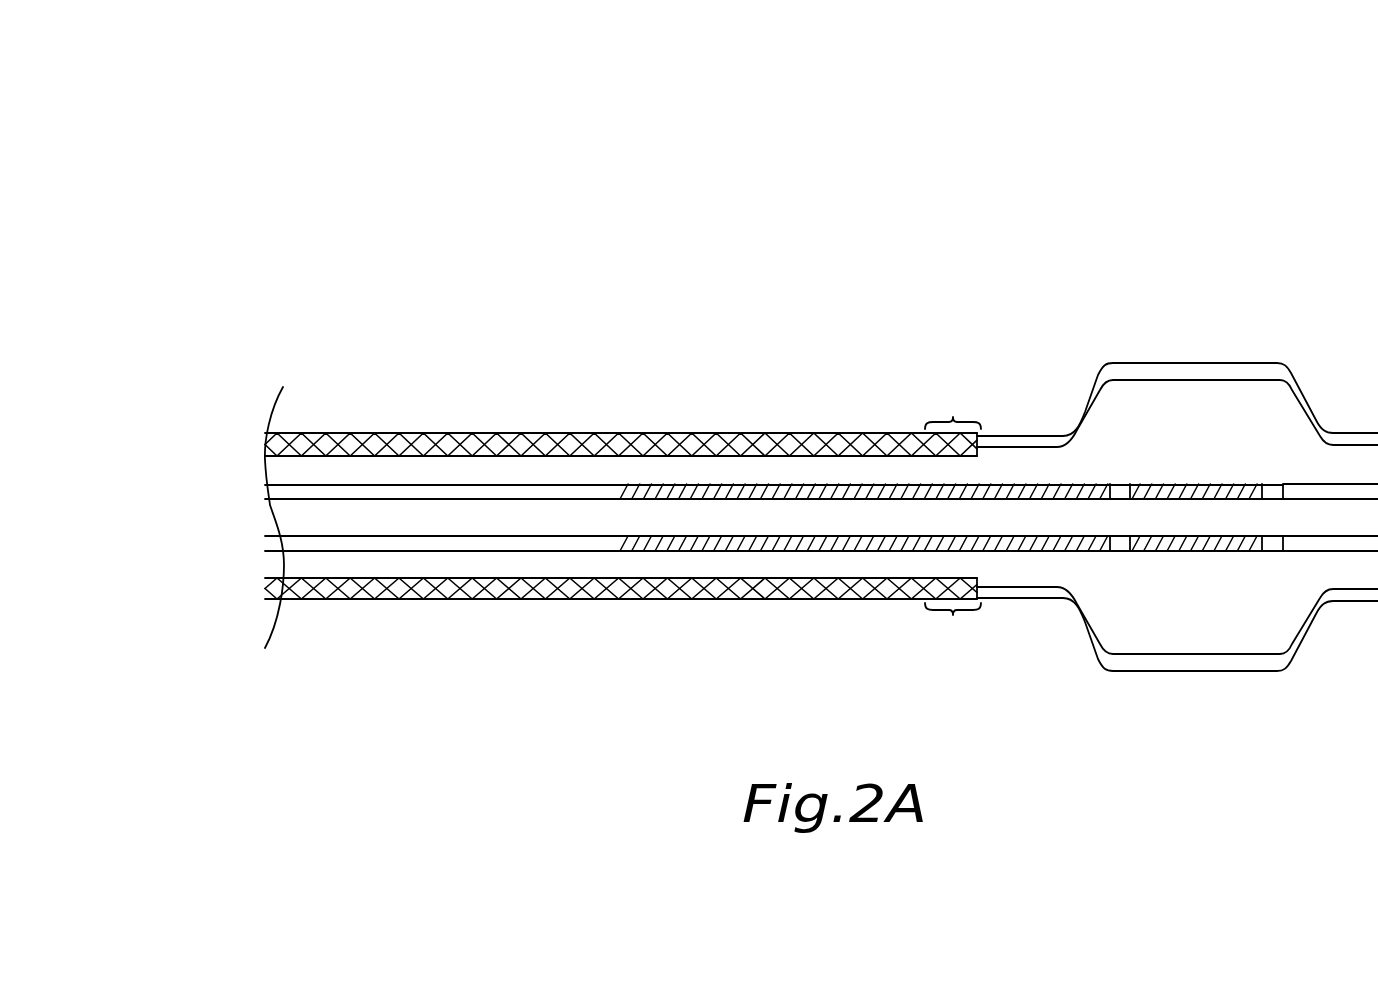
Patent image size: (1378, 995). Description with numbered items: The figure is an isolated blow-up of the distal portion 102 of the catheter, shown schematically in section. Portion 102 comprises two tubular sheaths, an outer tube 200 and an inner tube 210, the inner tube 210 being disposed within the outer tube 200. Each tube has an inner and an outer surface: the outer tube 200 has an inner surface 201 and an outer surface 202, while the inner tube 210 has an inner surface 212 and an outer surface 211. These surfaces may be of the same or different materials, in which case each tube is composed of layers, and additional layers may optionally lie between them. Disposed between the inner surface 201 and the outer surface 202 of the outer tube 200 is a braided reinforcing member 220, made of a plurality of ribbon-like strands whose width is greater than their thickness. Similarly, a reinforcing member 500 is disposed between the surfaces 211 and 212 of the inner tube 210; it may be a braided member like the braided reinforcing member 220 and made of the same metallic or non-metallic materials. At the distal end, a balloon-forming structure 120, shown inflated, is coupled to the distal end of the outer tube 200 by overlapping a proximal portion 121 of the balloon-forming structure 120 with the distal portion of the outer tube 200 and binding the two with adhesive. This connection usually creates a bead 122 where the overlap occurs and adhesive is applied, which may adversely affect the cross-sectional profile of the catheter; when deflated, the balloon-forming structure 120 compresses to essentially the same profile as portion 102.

The portion of catheter 102 is at (999, 192).
The balloon-forming structure 120 is at (1197, 363).
The proximal portion of balloon-forming structure 121 is at (953, 420).
The bead 122 is at (953, 614).
The outer tube 200 is at (265, 450).
The inner surface of outer tube 201 is at (636, 456).
The outer surface of outer tube 202 is at (362, 433).
The inner tube 210 is at (267, 497).
The outer surface of inner tube 211 is at (623, 551).
The inner surface of inner tube 212 is at (683, 535).
The braided reinforcing member 220 is at (540, 433).
The reinforcing member 500 is at (848, 551).